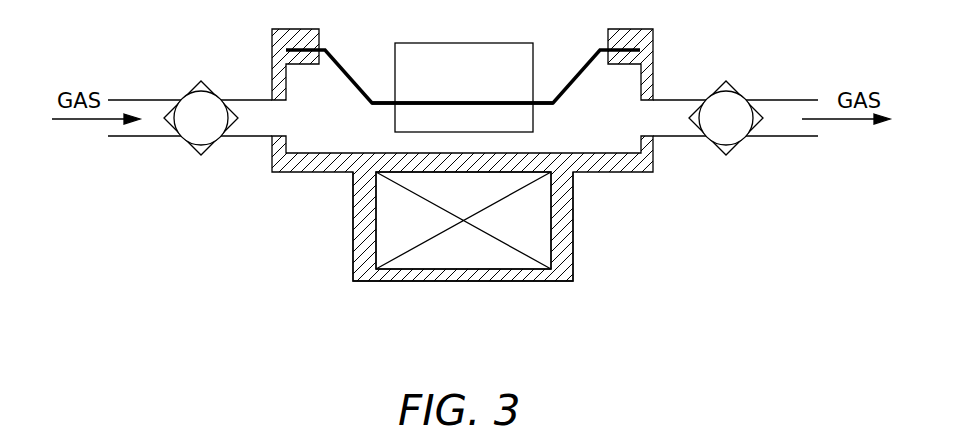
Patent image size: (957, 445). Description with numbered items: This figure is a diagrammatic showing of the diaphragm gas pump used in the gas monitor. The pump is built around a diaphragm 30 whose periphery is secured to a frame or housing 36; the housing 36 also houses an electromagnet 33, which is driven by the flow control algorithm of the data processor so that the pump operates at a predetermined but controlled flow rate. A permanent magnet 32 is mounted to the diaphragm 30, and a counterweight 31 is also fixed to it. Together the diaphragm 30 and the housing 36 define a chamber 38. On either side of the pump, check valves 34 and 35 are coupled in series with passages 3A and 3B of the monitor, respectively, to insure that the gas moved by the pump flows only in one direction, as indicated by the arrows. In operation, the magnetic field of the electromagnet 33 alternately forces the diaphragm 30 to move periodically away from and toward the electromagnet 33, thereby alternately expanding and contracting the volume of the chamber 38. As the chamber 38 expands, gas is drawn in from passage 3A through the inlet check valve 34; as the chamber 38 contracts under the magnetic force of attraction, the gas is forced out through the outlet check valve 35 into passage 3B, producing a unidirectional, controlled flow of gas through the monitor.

The diaphragm 30 is at (326, 49).
The counterweight 31 is at (466, 43).
The permanent magnet 32 is at (525, 120).
The electromagnet 33 is at (385, 268).
The check valve 34 is at (203, 155).
The outlet check valve 35 is at (728, 155).
The housing 36 is at (556, 282).
The chamber 38 is at (309, 140).
The passage 3A is at (126, 100).
The passage 3B is at (773, 100).